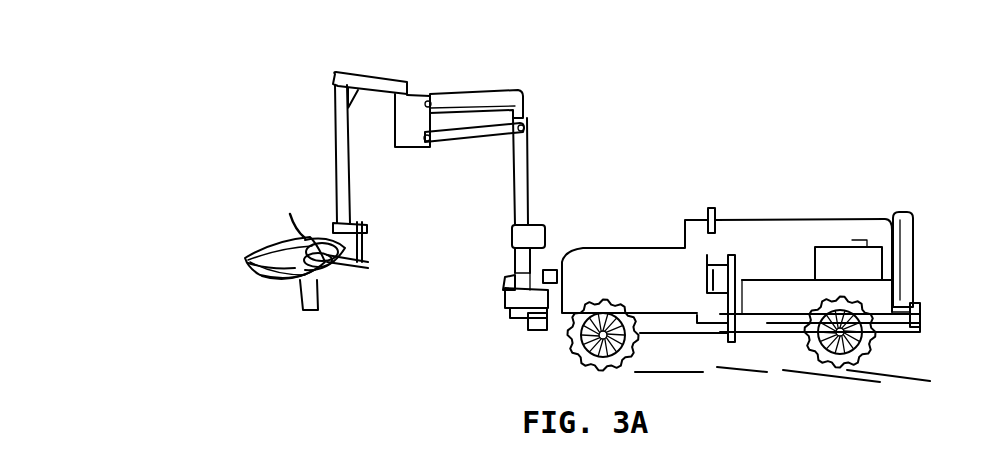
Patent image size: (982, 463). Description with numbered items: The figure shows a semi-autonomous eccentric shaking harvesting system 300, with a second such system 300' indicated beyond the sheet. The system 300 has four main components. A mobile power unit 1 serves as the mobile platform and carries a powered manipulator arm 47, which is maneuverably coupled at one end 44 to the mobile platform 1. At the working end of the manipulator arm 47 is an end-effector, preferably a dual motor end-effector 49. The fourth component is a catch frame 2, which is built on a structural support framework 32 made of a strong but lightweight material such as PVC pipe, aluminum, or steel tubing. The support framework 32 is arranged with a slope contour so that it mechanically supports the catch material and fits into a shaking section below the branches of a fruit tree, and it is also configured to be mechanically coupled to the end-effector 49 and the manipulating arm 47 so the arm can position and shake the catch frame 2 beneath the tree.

The semi-autonomous harvesting system 300 is at (232, 72).
The alternate vegetation cutting system 300' is at (136, 445).
The mobile power unit 1 is at (760, 198).
The catch frame 2 is at (267, 245).
The support framework 32 is at (270, 282).
The end of the manipulator arm 44 is at (490, 281).
The powered manipulator arm 47 is at (527, 167).
The dual motor end-effector 49 is at (312, 222).